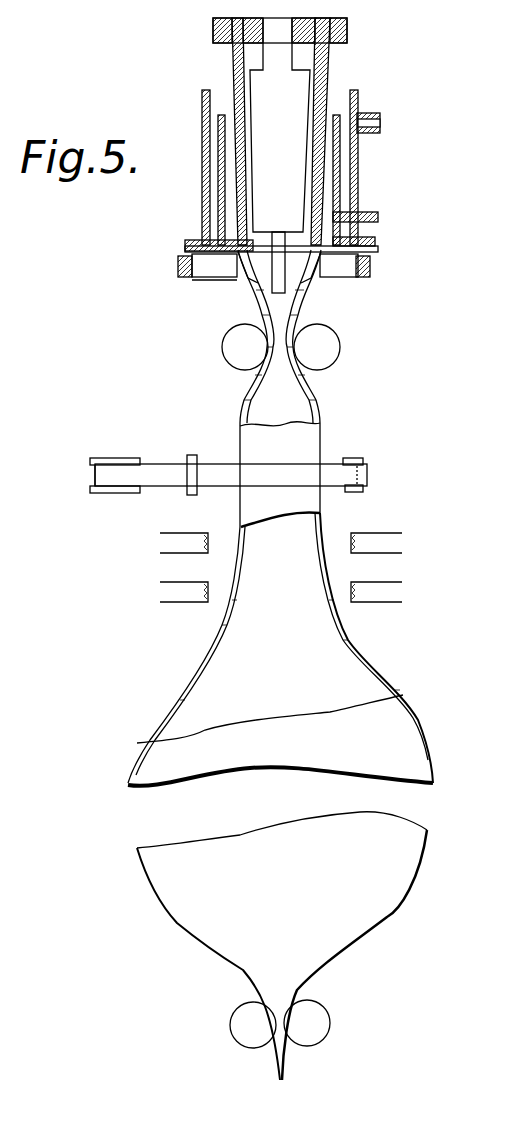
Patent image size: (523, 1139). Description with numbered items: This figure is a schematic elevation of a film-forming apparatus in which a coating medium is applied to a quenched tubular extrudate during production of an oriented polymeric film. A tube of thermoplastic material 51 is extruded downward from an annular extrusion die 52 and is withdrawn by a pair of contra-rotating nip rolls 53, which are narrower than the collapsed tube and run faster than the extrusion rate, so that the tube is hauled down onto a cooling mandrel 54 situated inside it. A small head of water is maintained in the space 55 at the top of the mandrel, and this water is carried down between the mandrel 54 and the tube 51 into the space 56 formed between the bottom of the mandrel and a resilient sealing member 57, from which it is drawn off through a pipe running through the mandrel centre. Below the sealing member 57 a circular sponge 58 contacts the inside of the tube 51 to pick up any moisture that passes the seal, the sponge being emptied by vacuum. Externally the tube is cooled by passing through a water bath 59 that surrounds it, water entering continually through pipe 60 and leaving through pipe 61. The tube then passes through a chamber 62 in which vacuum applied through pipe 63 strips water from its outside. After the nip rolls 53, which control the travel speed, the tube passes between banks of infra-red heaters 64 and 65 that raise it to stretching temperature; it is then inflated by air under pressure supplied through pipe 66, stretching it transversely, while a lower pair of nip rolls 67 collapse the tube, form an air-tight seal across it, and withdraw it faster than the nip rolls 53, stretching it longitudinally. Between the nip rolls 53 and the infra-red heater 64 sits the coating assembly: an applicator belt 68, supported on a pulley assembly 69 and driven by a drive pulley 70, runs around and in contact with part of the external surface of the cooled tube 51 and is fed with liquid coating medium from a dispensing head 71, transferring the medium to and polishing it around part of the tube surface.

The tube of thermoplastic material 51 is at (330, 67).
The annular extrusion die 52 is at (350, 40).
The contra-rotating nip rolls 53 is at (327, 357).
The cooling mandrel 54 is at (295, 103).
The space at top of mandrel 55 is at (250, 62).
The space below mandrel 56 is at (200, 227).
The resilient sealing member 57 is at (250, 268).
The circular sponge 58 is at (258, 283).
The water bath 59 is at (360, 173).
The water inlet pipe 60 is at (373, 218).
The water outlet pipe 61 is at (378, 123).
The vacuum chamber 62 is at (353, 265).
The vacuum pipe 63 is at (178, 263).
The infra-red heater bank 64 is at (388, 538).
The infra-red heater bank 65 is at (172, 590).
The air pipe 66 is at (285, 292).
The nip rolls 67 is at (240, 1015).
The applicator belt 68 is at (323, 462).
The pulley assembly 69 is at (367, 457).
The drive pulley 70 is at (117, 458).
The dispensing head 71 is at (188, 493).